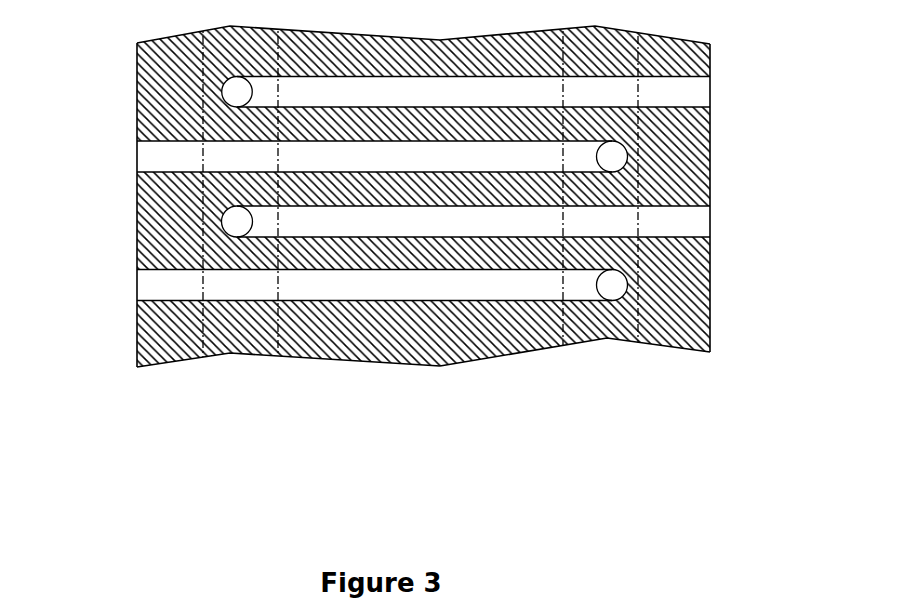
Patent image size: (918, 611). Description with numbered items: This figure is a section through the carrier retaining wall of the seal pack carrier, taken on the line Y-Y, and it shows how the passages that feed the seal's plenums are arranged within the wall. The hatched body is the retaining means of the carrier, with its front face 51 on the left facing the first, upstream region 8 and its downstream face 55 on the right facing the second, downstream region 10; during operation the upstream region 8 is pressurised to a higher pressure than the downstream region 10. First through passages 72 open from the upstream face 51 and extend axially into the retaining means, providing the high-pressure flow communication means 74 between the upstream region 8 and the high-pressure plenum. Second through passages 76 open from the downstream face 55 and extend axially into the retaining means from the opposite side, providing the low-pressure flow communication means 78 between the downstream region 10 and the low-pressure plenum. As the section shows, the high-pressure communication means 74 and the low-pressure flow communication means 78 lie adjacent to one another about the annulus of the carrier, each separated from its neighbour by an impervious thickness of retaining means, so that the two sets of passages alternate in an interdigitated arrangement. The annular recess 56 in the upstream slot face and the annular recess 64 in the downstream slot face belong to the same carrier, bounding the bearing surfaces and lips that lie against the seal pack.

The upstream region 8 is at (157, 197).
The downstream region 10 is at (689, 197).
The front face 51 is at (137, 214).
The downstream face 55 is at (711, 135).
The annular recess 56 is at (247, 342).
The annular recess 64 is at (620, 333).
The first through passages 72 is at (137, 302).
The high-pressure flow communication means 74 is at (185, 302).
The second through passages 76 is at (700, 218).
The low-pressure flow communication means 78 is at (650, 230).